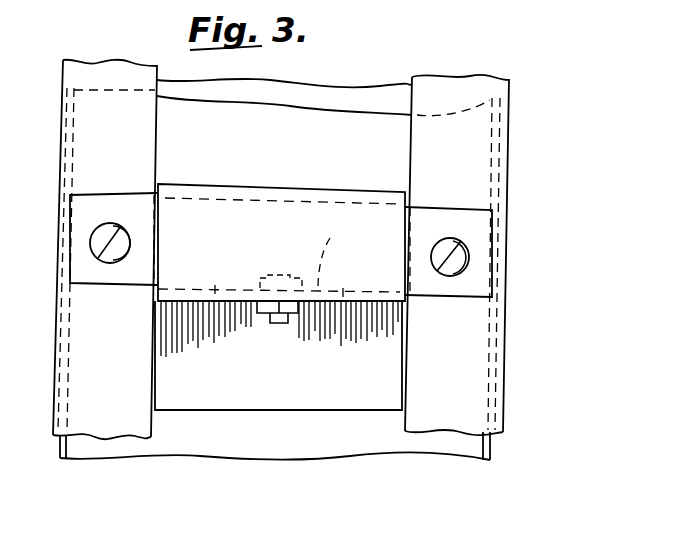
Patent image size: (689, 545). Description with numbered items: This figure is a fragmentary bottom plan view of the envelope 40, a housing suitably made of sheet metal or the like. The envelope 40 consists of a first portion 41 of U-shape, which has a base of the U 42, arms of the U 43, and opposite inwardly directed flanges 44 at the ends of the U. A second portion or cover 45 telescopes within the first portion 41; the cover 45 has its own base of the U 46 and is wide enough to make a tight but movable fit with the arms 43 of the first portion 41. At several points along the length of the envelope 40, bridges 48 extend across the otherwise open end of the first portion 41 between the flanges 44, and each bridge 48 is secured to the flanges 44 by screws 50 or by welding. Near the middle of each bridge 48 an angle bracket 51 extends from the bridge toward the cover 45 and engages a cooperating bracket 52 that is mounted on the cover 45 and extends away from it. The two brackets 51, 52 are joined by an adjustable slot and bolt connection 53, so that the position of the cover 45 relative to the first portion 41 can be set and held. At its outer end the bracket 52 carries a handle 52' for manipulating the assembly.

The envelope 40 is at (510, 112).
The first portion 41 is at (460, 345).
The base of the U 42 is at (318, 88).
The arms of the U 43 is at (508, 203).
The inwardly directed flanges 44 is at (113, 77).
The cover 45 is at (246, 148).
The base of the U 46 is at (322, 190).
The bridges 48 is at (422, 220).
The screws 50 is at (471, 258).
The angle bracket 51 is at (340, 252).
The cooperating bracket 52 is at (279, 307).
The handle 52' is at (282, 219).
The slot and bolt connection 53 is at (302, 256).